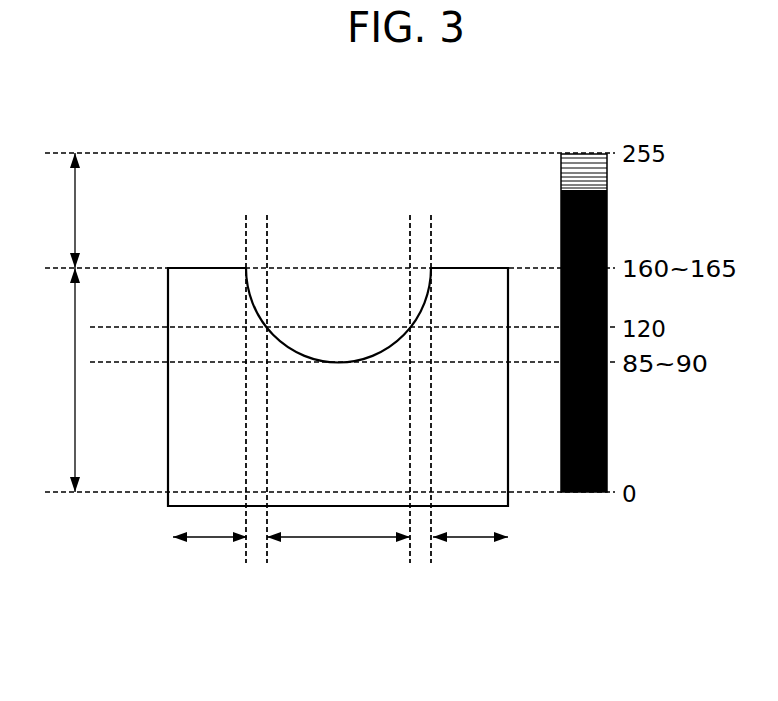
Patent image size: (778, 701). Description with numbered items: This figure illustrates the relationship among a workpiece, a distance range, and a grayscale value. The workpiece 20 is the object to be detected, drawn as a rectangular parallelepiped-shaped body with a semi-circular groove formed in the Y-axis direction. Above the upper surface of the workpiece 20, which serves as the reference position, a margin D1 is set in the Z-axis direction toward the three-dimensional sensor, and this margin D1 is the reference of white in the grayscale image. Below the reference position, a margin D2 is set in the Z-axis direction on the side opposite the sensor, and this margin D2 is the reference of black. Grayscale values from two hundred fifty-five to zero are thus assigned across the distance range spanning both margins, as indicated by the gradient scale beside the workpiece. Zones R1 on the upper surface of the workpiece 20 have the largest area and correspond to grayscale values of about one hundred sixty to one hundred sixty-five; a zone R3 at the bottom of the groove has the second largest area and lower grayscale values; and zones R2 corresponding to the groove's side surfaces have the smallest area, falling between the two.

The workpiece 20 is at (168, 428).
The margin D1 is at (58, 210).
The margin D2 is at (56, 380).
The zones R1 is at (210, 540).
The zones R2 is at (257, 540).
The zone R3 is at (338, 540).